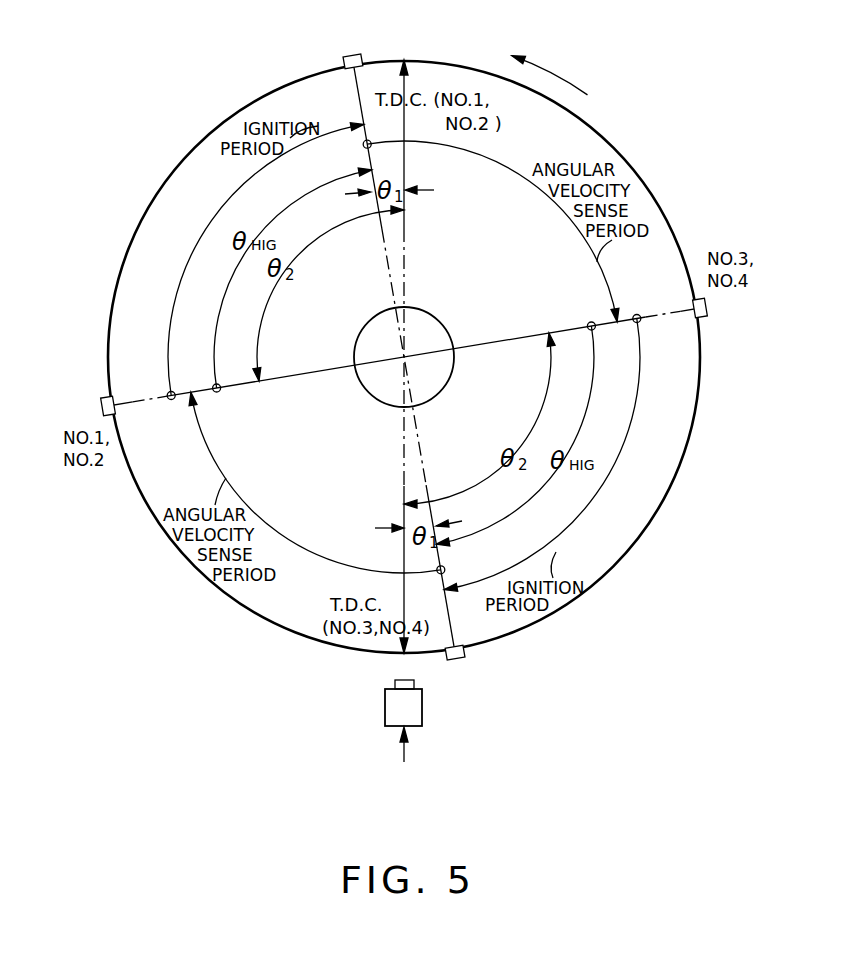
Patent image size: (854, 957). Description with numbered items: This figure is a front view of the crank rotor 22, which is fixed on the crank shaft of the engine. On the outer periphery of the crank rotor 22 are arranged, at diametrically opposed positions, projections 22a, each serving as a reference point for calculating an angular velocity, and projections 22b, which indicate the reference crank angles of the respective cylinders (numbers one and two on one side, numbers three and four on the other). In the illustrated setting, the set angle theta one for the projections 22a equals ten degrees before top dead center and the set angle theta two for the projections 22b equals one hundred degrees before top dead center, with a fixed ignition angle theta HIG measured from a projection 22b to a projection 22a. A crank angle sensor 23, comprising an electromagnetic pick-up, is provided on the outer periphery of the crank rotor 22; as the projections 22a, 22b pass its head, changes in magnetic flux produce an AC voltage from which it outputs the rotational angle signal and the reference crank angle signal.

The crank rotor 22 is at (608, 138).
The projections 22a is at (352, 51).
The projections 22b is at (102, 407).
The crank angle sensor 23 is at (385, 708).